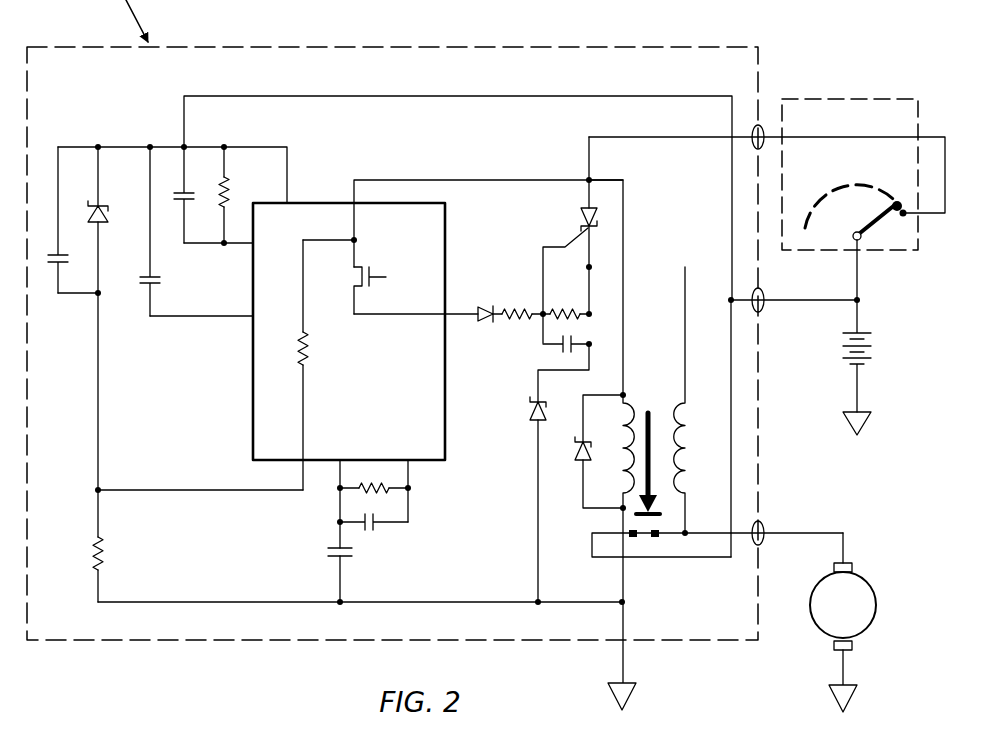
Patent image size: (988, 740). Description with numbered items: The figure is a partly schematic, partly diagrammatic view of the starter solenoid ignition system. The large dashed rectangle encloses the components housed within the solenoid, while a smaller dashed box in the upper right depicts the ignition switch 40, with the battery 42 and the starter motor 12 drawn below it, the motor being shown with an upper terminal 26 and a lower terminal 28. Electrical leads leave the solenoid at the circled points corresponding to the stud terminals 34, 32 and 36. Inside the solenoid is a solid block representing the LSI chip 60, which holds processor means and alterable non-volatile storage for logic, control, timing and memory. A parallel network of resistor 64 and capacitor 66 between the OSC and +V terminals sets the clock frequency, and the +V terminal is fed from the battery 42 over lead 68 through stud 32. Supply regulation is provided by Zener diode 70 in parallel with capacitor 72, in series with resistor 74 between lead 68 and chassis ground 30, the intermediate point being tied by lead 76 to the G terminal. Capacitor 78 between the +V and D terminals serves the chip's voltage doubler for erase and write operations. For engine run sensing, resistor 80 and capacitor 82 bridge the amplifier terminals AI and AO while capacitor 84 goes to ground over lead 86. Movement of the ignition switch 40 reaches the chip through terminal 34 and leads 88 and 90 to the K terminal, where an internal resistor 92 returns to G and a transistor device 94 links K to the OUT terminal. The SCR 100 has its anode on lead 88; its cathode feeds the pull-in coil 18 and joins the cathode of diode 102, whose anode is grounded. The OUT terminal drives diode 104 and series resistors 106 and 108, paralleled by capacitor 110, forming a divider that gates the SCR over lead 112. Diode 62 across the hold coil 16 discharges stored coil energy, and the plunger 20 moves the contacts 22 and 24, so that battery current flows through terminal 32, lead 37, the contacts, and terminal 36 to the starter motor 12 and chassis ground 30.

The starter motor 12 is at (882, 596).
The hold coil 16 is at (626, 401).
The pull-in coil 18 is at (679, 470).
The plunger 20 is at (649, 414).
The contact 22 is at (633, 538).
The contact 24 is at (656, 538).
The motor terminal 26 is at (853, 563).
The motor terminal 28 is at (853, 647).
The chassis ground 30 is at (632, 690).
The stud terminal 32 is at (762, 305).
The stud terminal 34 is at (761, 127).
The stud terminal 36 is at (767, 526).
The lead 37 is at (730, 363).
The ignition switch 40 is at (860, 92).
The battery 42 is at (872, 324).
The LSI chip 60 is at (349, 307).
The diode 62 is at (576, 449).
The resistor 64 is at (226, 189).
The capacitor 66 is at (181, 212).
The lead 68 is at (388, 96).
The Zener diode 70 is at (112, 318).
The capacitor 72 is at (56, 268).
The resistor 74 is at (105, 546).
The lead 76 is at (167, 488).
The capacitor 78 is at (143, 289).
The resistor 80 is at (360, 490).
The capacitor 82 is at (378, 531).
The capacitor 84 is at (333, 559).
The lead 86 is at (482, 602).
The lead 88 is at (675, 138).
The lead 90 is at (447, 179).
The resistor 92 is at (306, 349).
The transistor device 94 is at (379, 278).
The SCR 100 is at (585, 209).
The diode 102 is at (528, 401).
The diode 104 is at (488, 302).
The resistor 106 is at (525, 319).
The resistor 108 is at (565, 308).
The capacitor 110 is at (565, 348).
The lead 112 is at (560, 245).